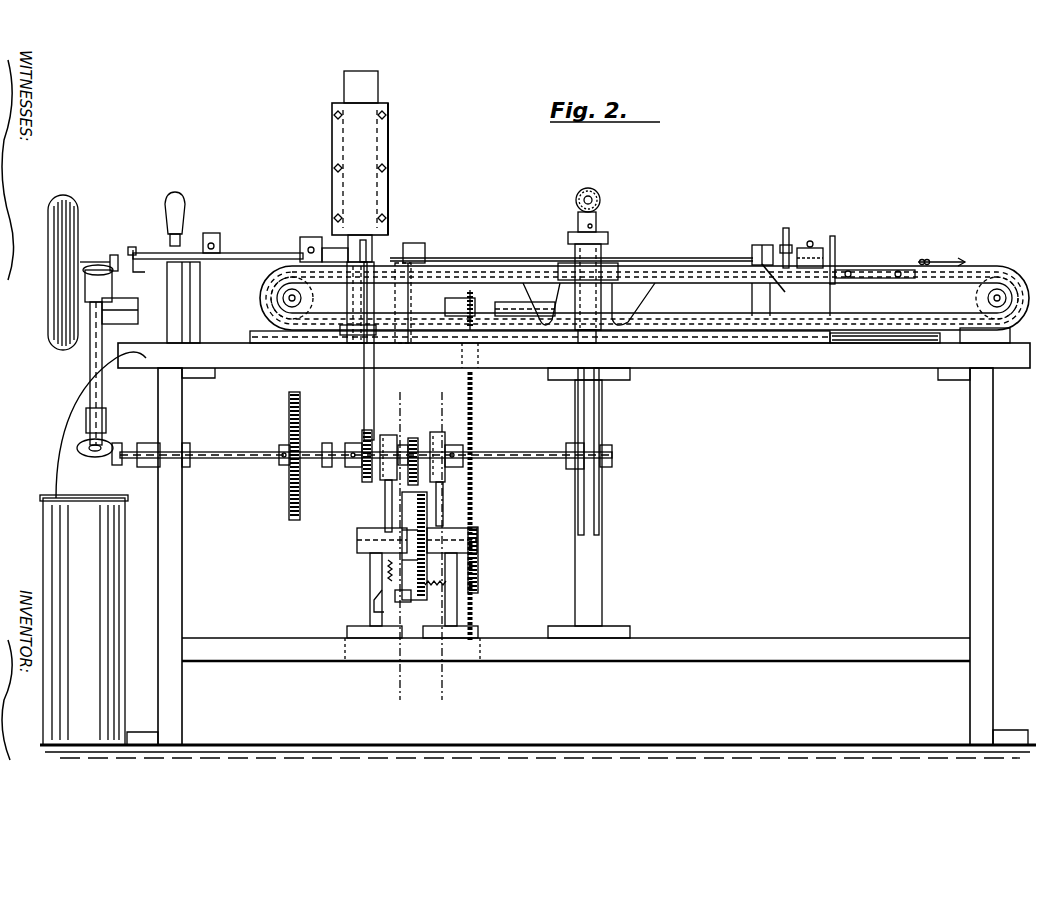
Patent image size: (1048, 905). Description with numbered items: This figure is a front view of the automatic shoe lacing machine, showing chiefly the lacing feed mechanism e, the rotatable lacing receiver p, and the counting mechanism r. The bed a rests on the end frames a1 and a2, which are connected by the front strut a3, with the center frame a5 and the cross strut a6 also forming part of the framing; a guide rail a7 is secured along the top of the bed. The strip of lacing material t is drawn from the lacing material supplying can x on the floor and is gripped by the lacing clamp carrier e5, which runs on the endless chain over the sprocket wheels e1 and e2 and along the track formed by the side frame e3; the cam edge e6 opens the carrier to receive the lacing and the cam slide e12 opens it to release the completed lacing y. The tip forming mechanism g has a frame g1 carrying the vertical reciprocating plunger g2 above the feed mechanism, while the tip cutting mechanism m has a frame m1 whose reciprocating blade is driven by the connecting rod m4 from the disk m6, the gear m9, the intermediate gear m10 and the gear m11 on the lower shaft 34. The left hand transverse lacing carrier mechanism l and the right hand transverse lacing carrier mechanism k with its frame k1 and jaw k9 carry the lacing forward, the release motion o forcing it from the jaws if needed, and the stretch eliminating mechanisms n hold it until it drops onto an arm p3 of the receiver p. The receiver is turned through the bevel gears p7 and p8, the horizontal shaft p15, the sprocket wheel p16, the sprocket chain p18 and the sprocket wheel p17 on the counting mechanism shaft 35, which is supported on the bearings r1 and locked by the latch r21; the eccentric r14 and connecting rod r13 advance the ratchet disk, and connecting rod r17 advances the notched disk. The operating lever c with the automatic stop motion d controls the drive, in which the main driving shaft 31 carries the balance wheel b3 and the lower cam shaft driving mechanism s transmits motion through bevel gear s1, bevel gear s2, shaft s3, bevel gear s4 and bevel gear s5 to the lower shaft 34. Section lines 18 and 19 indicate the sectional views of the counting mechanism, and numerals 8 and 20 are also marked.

The bed a is at (725, 366).
The end frame a1 is at (184, 578).
The end frame a2 is at (978, 526).
The front strut a3 is at (810, 640).
The center frame a5 is at (600, 580).
The cross strut a6 is at (484, 661).
The guide rail a7 is at (918, 346).
The lacing feed mechanism e is at (280, 312).
The sprocket wheel e1 is at (692, 322).
The sprocket wheel e2 is at (972, 312).
The side frame e3 is at (874, 320).
The lacing clamp carrier e5 is at (330, 246).
The cam edge e6 is at (266, 290).
The cam slide e12 is at (884, 262).
The completed lacing y is at (690, 258).
The tip forming mechanism g is at (332, 156).
The frame g1 is at (390, 164).
The vertical reciprocating plunger g2 is at (344, 98).
The tip cutting mechanism m is at (372, 258).
The frame m1 is at (356, 338).
The connecting rod m4 is at (372, 400).
The disk m6 is at (362, 474).
The gear m9 is at (286, 466).
The intermediate gear m10 is at (290, 430).
The gear m11 is at (294, 512).
The stretch eliminating mechanism n is at (424, 246).
The left hand transverse lacing carrier mechanism l is at (280, 254).
The operating lever c is at (176, 194).
The automatic stop motion d is at (137, 241).
The bevel gear s1 is at (119, 251).
The main driving shaft 31 is at (90, 264).
The balance wheel b3 is at (76, 208).
The bevel gear s2 is at (82, 288).
The shaft s3 is at (90, 376).
The lower cam shaft driving mechanism s is at (84, 456).
The bevel gear s4 is at (76, 448).
The bevel gear s5 is at (110, 462).
The lacing material supplying can x is at (42, 544).
The strip of lacing material t is at (64, 410).
The lower shaft 34 is at (232, 452).
The bearing 8 is at (334, 410).
The clutch 20 is at (395, 445).
The section line 19 is at (394, 553).
The section line 18 is at (441, 553).
The connecting rod r17 is at (366, 502).
The eccentric r14 is at (437, 432).
The connecting rod r13 is at (462, 494).
The counting mechanism r is at (408, 548).
The bearing r1 is at (372, 610).
The latch r21 is at (404, 606).
The counting mechanism shaft 35 is at (480, 546).
The sprocket chain p18 is at (474, 414).
The sprocket wheel p17 is at (476, 588).
The rotatable lacing receiver p is at (568, 266).
The bevel gear p7 is at (598, 222).
The bevel gear p8 is at (578, 196).
The arm p3 is at (652, 290).
The sprocket wheel p16 is at (470, 296).
The horizontal shaft p15 is at (510, 312).
The frame k1 is at (756, 300).
The jaw k9 is at (814, 270).
The release motion o is at (790, 239).
The right hand transverse lacing carrier mechanism k is at (834, 248).